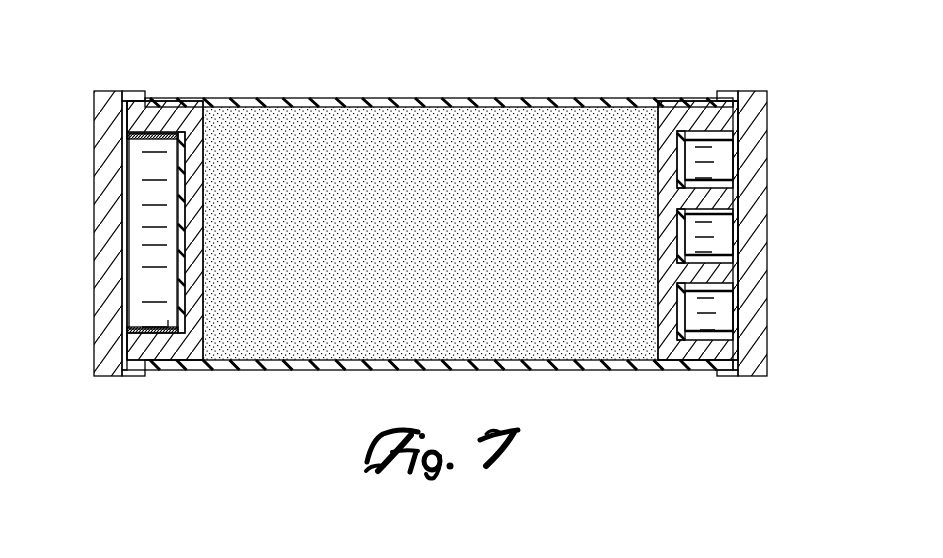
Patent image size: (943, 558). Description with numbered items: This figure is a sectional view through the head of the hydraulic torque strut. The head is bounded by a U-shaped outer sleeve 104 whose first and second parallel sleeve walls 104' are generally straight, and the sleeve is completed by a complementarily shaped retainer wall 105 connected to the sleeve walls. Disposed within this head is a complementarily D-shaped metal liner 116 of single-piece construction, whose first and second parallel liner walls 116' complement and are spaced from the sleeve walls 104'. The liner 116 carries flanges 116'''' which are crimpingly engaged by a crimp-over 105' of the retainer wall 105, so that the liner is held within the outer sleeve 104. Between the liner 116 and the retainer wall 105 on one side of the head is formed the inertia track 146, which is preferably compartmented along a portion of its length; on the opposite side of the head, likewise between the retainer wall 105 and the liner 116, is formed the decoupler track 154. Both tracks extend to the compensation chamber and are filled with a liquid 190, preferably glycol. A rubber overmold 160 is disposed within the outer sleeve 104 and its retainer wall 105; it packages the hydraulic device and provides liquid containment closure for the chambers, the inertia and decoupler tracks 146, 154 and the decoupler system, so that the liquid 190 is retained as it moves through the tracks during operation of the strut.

The U-shaped outer sleeve 104 is at (455, 195).
The first and second parallel sleeve walls 104' is at (434, 259).
The retainer wall 105 is at (423, 235).
The crimp-over 105' is at (430, 234).
The D-shaped metal liner 116 is at (432, 215).
The first and second parallel liner walls 116' is at (432, 292).
The flanges 116'''' is at (439, 231).
The inertia track 146 is at (710, 307).
The decoupler track 154 is at (162, 280).
The rubber overmold 160 is at (454, 99).
The liquid 190 is at (167, 337).